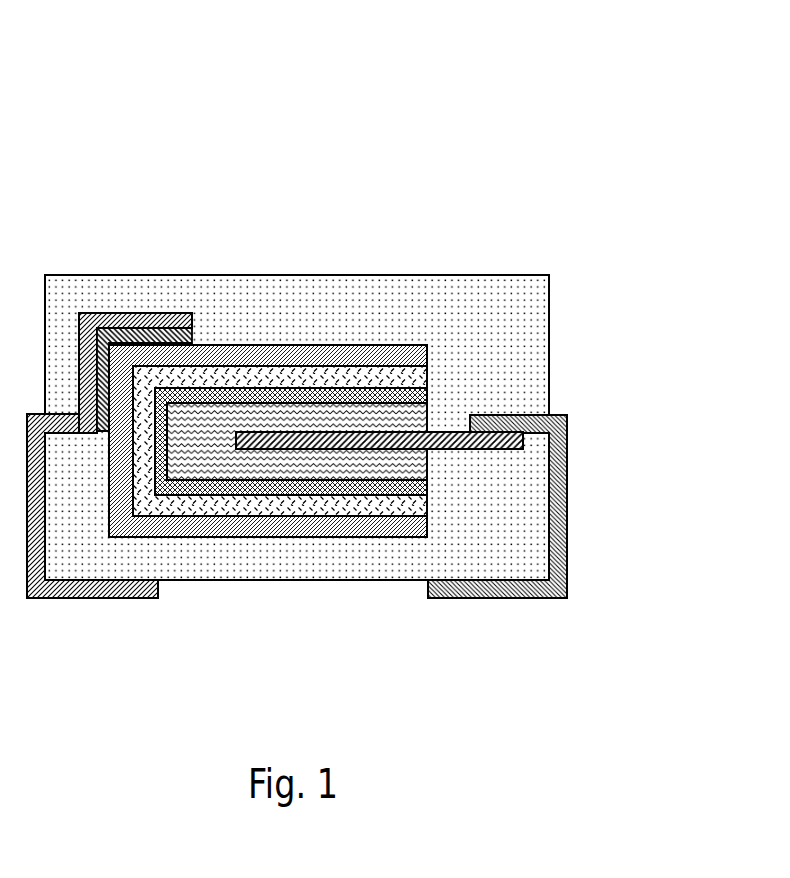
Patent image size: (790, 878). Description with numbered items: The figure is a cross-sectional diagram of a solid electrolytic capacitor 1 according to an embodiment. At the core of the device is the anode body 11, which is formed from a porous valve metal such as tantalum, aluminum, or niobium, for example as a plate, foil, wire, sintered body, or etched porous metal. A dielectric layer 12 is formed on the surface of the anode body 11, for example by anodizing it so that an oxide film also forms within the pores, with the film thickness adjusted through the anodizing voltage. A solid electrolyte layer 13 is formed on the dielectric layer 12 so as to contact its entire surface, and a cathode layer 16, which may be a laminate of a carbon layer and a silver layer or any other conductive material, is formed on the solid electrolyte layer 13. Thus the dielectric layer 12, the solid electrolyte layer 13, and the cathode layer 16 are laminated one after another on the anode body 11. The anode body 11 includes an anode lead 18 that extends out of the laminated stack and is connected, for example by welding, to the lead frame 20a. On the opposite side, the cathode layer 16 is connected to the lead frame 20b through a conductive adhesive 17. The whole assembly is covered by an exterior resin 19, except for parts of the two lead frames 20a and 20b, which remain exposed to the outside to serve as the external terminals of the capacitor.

The solid electrolytic capacitor 1 is at (567, 90).
The anode body 11 is at (420, 468).
The dielectric layer 12 is at (428, 396).
The solid electrolyte layer 13 is at (428, 378).
The cathode layer 16 is at (428, 357).
The conductive adhesive 17 is at (193, 332).
The anode lead 18 is at (510, 450).
The exterior resin 19 is at (88, 287).
The lead frame 20a is at (493, 598).
The lead frame 20b is at (112, 598).